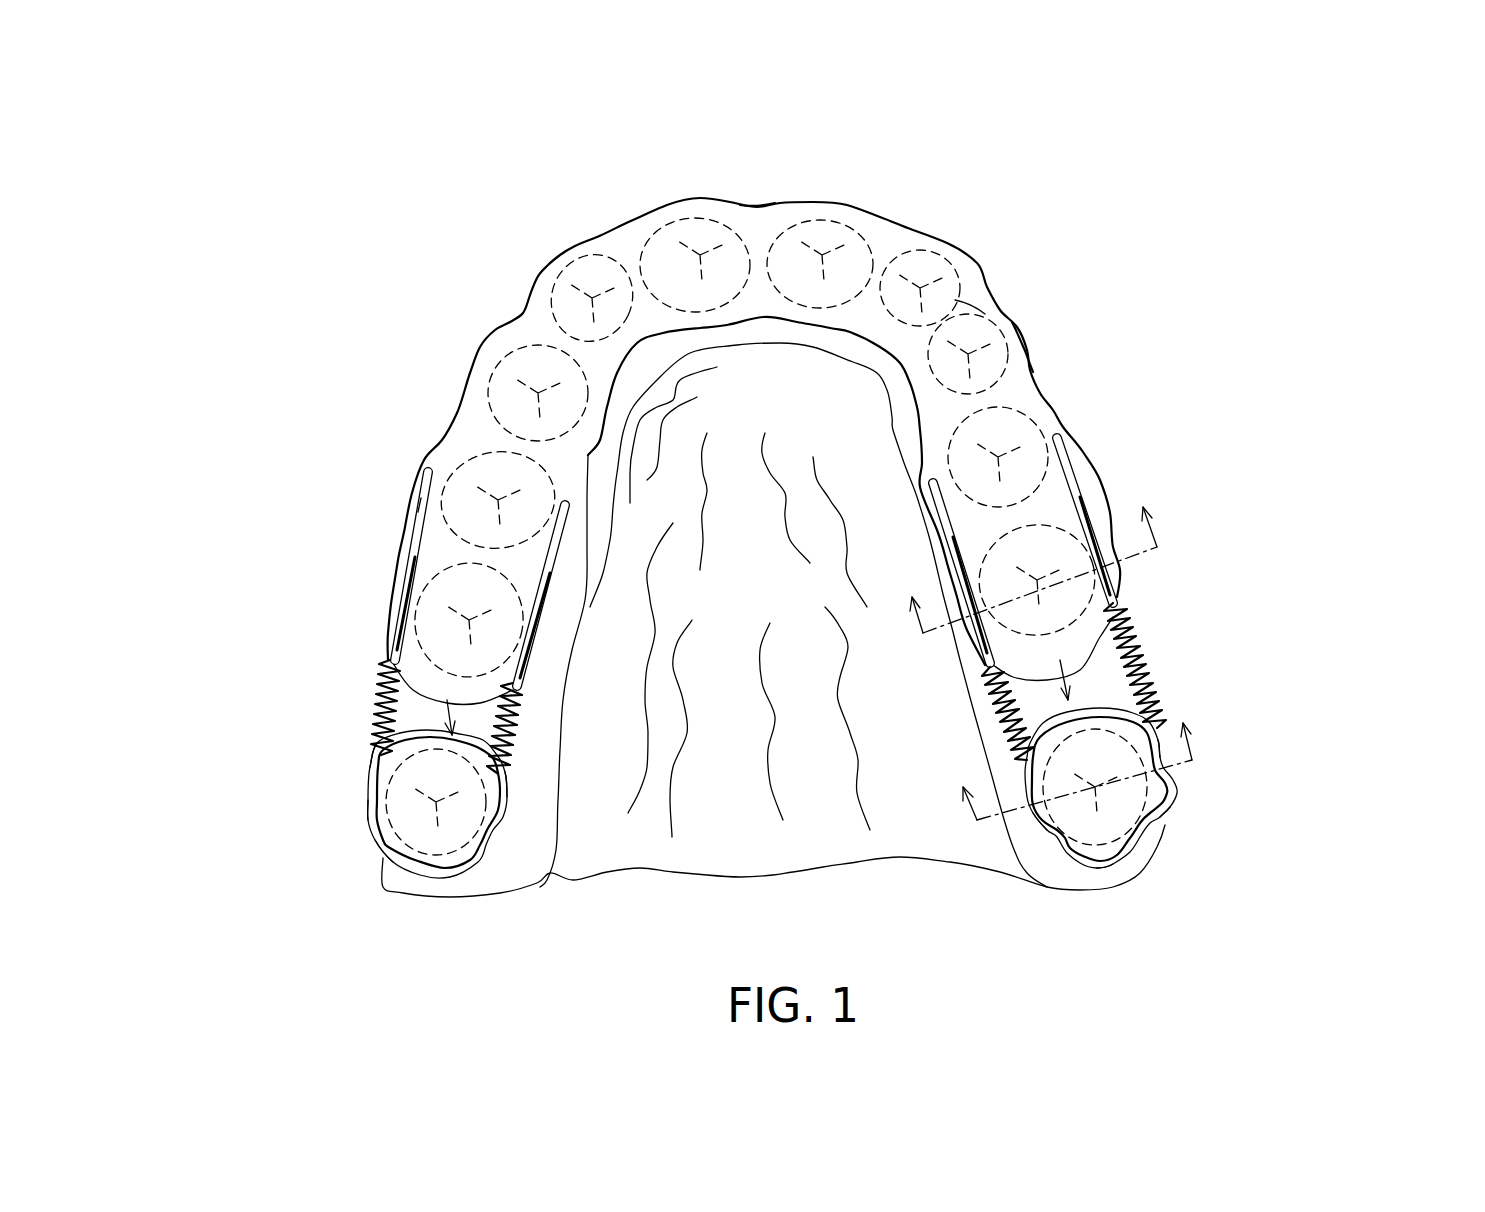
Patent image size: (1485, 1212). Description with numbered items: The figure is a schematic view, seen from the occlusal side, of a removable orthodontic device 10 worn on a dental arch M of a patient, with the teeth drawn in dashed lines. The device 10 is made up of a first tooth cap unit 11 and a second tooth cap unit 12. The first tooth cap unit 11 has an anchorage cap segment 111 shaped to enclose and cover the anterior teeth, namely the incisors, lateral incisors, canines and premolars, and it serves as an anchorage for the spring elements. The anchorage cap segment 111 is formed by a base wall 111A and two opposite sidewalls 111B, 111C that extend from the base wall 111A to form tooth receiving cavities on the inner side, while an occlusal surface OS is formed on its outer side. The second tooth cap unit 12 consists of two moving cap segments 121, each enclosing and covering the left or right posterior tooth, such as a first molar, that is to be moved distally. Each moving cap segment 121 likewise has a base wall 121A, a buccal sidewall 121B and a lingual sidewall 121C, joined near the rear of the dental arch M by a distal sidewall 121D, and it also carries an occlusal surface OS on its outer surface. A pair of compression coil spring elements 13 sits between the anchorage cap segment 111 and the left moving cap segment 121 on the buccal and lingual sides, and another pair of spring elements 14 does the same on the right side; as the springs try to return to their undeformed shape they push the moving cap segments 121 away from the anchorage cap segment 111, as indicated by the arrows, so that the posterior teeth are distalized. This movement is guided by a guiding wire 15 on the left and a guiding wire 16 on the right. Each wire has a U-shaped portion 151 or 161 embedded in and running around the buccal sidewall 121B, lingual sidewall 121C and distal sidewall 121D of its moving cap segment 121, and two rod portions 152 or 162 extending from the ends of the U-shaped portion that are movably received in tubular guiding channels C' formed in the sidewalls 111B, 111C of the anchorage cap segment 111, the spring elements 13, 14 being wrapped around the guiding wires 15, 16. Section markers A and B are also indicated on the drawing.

The removable orthodontic device 10 is at (300, 165).
The first tooth cap unit 11 is at (447, 333).
The anchorage cap segment 111 is at (880, 217).
The base wall 111A is at (762, 250).
The buccal sidewall 111B is at (1028, 367).
The lingual sidewall 111C is at (902, 370).
The second tooth cap unit 12 is at (208, 812).
The moving cap segment 121 is at (420, 867).
The base wall 121A is at (367, 833).
The buccal sidewall 121B is at (367, 783).
The lingual sidewall 121C is at (503, 817).
The distal sidewall 121D is at (397, 863).
The spring element 13 is at (382, 705).
The spring element 14 is at (1140, 643).
The guiding wire 15 is at (194, 437).
The U-shaped portion 151 is at (373, 813).
The rod portion 152 is at (537, 603).
The guiding wire 16 is at (1384, 437).
The U-shaped portion 161 is at (1165, 810).
The rod portion 162 is at (977, 597).
The occlusal surface OS is at (963, 307).
The dental arch M is at (790, 875).
The section line A-A' A is at (1022, 554).
The section line B-B' B is at (1075, 753).
The guiding channel C' is at (724, 435).